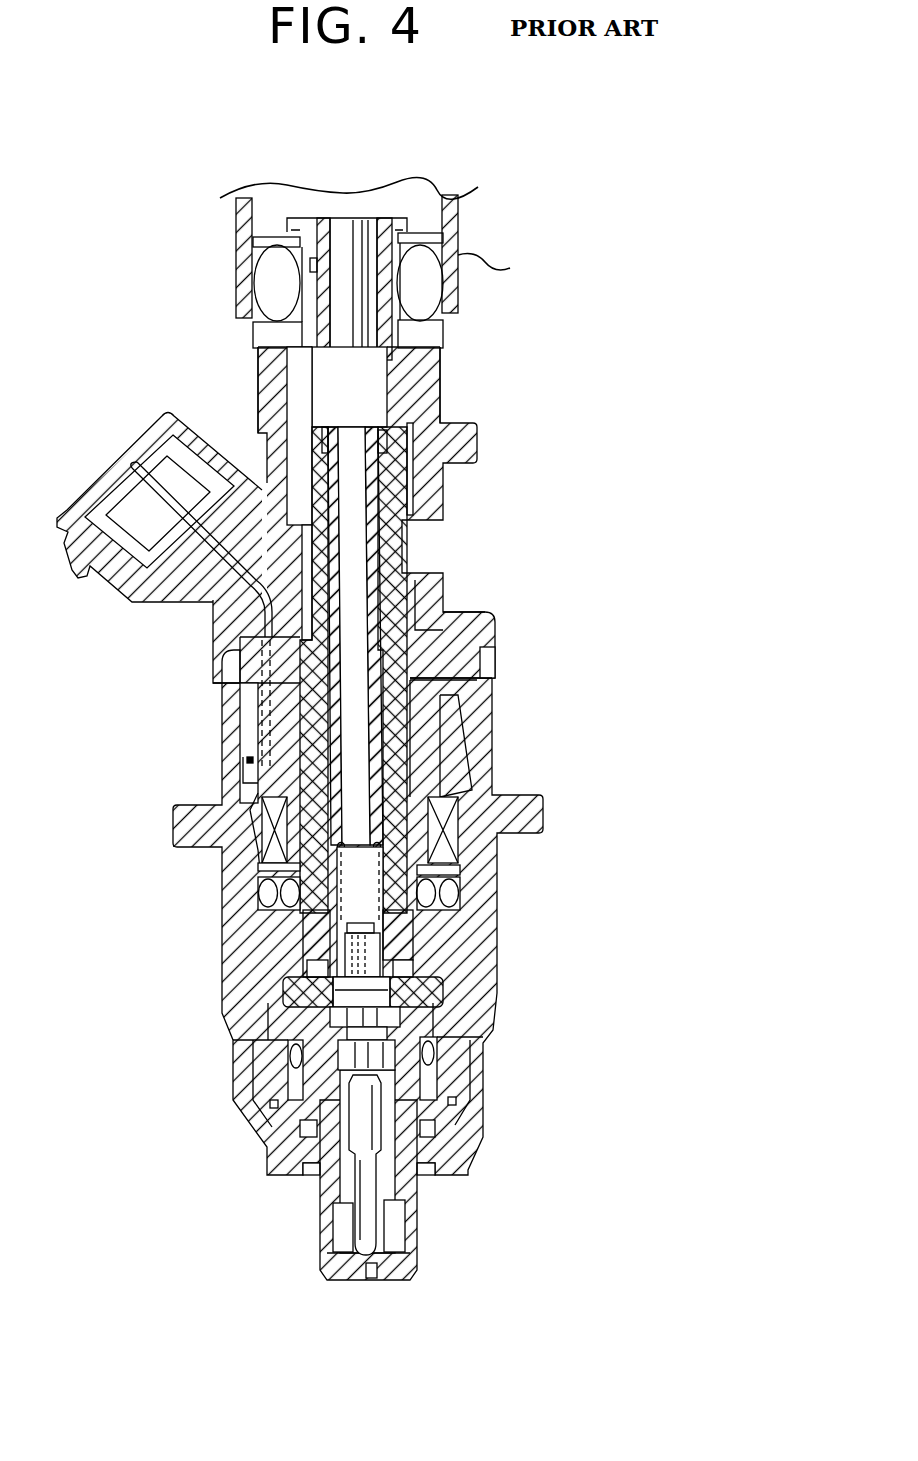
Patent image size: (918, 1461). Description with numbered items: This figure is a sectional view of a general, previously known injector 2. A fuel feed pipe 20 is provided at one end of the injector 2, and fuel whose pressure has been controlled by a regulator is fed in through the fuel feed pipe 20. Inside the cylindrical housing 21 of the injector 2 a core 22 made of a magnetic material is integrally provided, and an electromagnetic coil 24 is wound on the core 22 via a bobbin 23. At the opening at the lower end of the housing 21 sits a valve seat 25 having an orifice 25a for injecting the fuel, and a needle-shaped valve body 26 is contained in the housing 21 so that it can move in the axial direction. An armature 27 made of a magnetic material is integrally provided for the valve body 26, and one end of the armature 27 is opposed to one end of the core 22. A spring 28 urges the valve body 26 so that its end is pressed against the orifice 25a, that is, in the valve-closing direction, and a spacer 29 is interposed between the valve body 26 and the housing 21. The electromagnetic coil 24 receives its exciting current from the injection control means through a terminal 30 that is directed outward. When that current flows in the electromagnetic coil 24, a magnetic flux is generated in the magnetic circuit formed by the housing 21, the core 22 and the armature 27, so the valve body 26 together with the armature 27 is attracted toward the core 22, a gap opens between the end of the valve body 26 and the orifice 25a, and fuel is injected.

The injector 2 is at (205, 920).
The fuel feed pipe 20 is at (458, 262).
The housing 21 is at (480, 873).
The core 22 is at (447, 640).
The bobbin 23 is at (480, 714).
The electromagnetic coil 24 is at (443, 783).
The valve seat 25 is at (427, 1209).
The orifice 25a is at (370, 1280).
The valve body 26 is at (363, 1115).
The armature 27 is at (400, 927).
The spring 28 is at (417, 840).
The spacer 29 is at (433, 985).
The terminal 30 is at (130, 462).